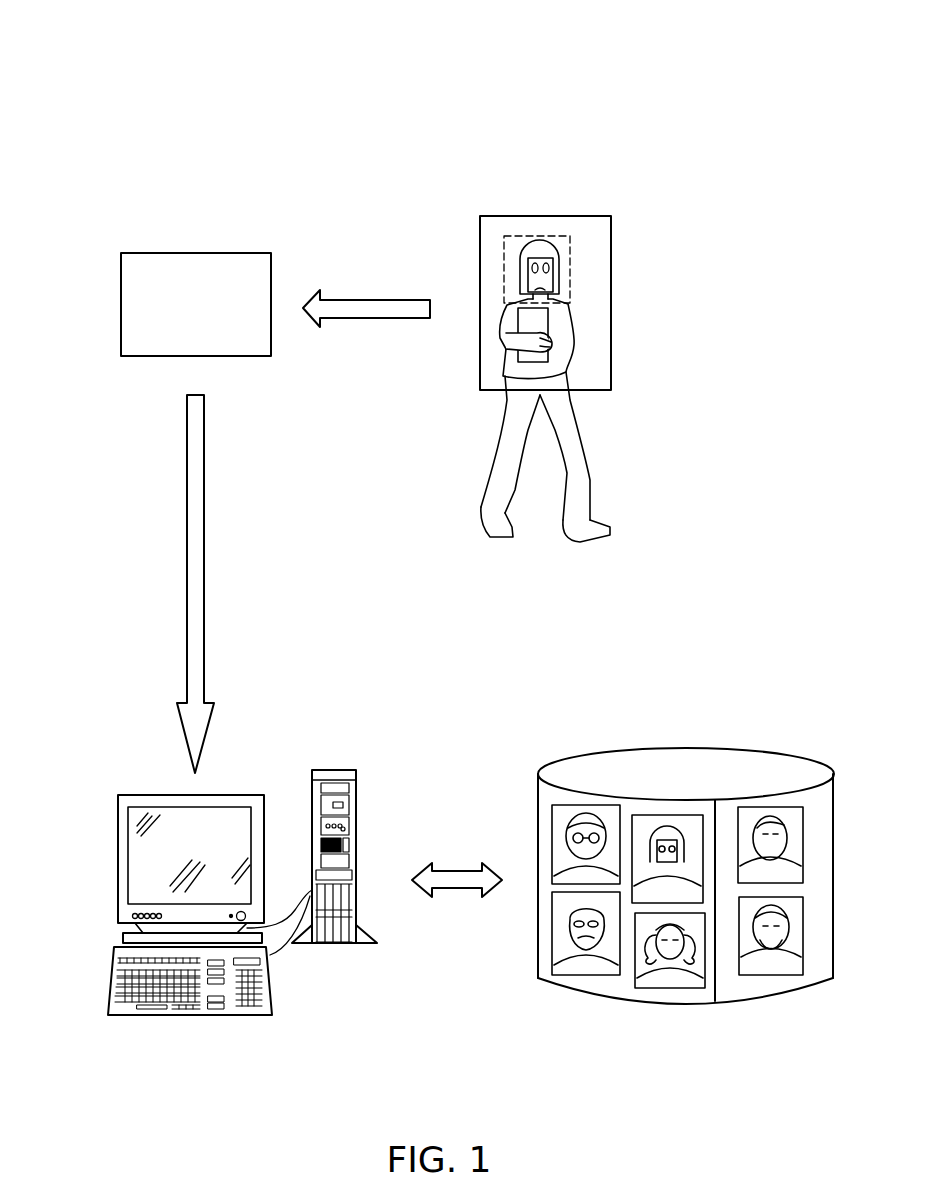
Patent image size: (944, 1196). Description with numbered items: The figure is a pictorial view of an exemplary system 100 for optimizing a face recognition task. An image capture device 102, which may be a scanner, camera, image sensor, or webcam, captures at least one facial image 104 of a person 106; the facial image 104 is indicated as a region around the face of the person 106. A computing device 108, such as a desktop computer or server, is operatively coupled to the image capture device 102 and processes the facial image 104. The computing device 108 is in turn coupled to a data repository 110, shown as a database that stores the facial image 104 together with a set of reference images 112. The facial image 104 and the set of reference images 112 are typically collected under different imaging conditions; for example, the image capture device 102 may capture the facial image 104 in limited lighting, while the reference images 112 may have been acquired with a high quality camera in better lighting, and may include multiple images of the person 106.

The system 100 is at (655, 64).
The image capture device 102 is at (197, 253).
The facial image 104 is at (570, 263).
The person 106 is at (540, 240).
The computing device 108 is at (118, 822).
The data repository 110 is at (747, 772).
The set of reference images 112 is at (813, 980).